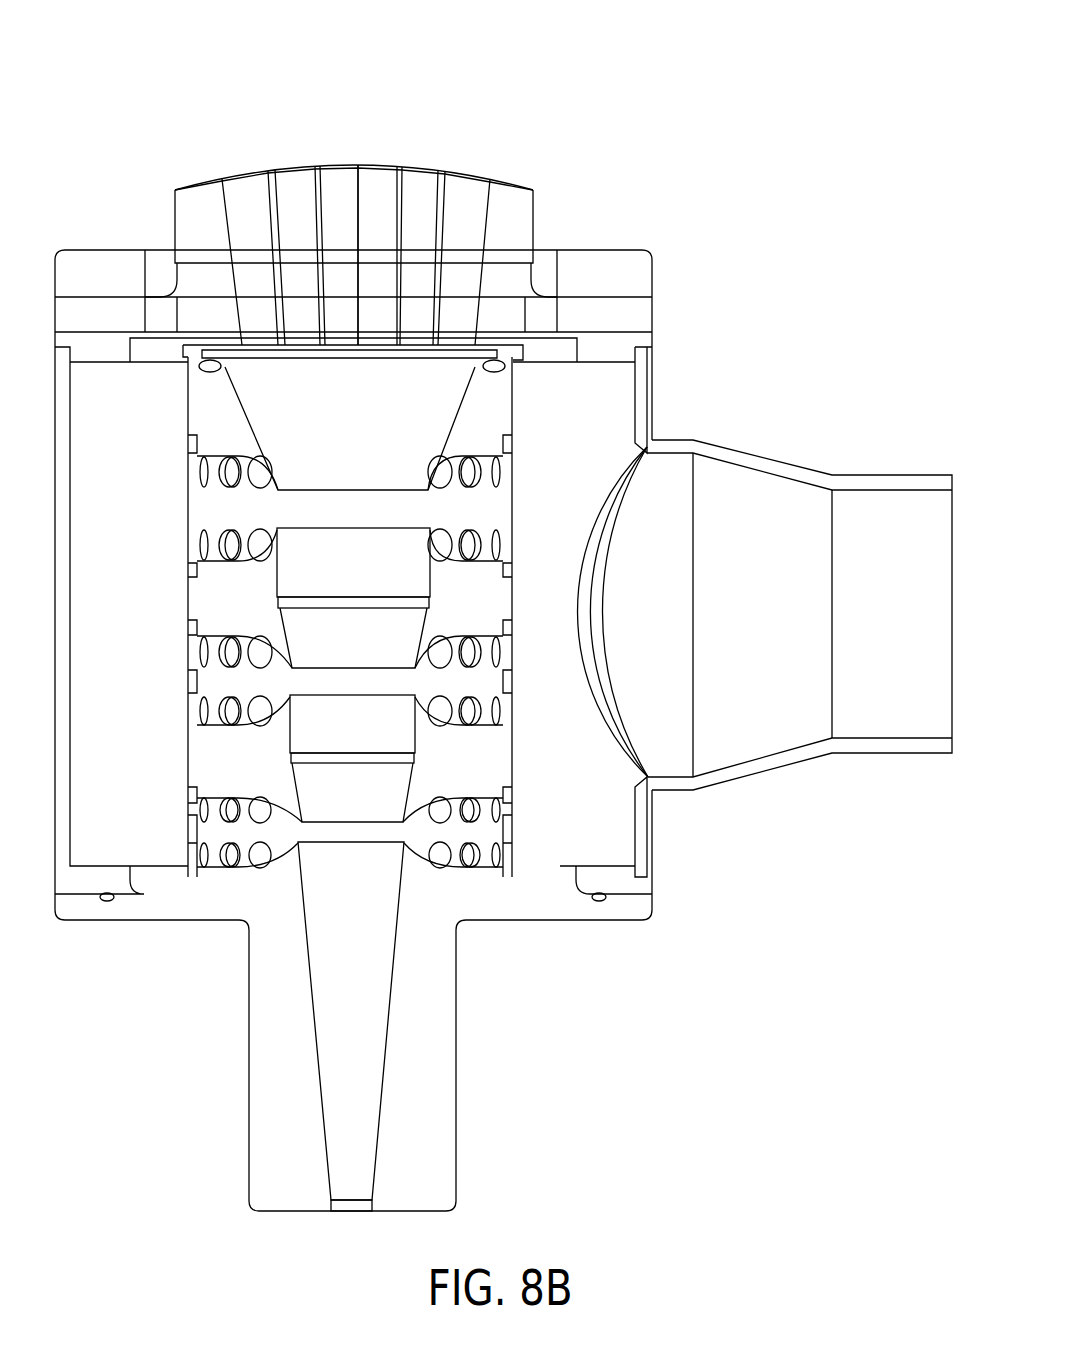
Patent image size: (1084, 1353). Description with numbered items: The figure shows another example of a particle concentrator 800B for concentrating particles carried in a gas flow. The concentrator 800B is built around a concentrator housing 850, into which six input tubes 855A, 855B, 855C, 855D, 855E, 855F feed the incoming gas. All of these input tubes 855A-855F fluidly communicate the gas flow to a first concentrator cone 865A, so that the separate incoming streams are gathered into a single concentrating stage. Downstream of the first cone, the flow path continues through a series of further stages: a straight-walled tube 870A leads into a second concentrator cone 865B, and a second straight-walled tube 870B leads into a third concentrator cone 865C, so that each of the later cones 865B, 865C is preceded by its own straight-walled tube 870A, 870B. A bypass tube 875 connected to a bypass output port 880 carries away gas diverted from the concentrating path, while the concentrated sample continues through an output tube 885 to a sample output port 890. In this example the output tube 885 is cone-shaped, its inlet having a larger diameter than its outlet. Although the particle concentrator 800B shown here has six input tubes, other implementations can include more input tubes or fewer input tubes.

The particle concentrator 800B is at (414, 80).
The concentrator housing 850 is at (652, 338).
The input tube 855A is at (295, 195).
The input tube 855B is at (247, 200).
The input tube 855C is at (345, 193).
The input tube 855D is at (367, 197).
The input tube 855E is at (417, 195).
The input tube 855F is at (465, 202).
The concentrator cone 865A is at (277, 425).
The concentrator cone 865B is at (412, 628).
The concentrator cone 865C is at (397, 790).
The straight-walled tube 870A is at (285, 578).
The straight-walled tube 870B is at (302, 733).
The bypass tube 875 is at (752, 487).
The bypass output port 880 is at (647, 453).
The output tube 885 is at (368, 1064).
The sample output port 890 is at (368, 1202).